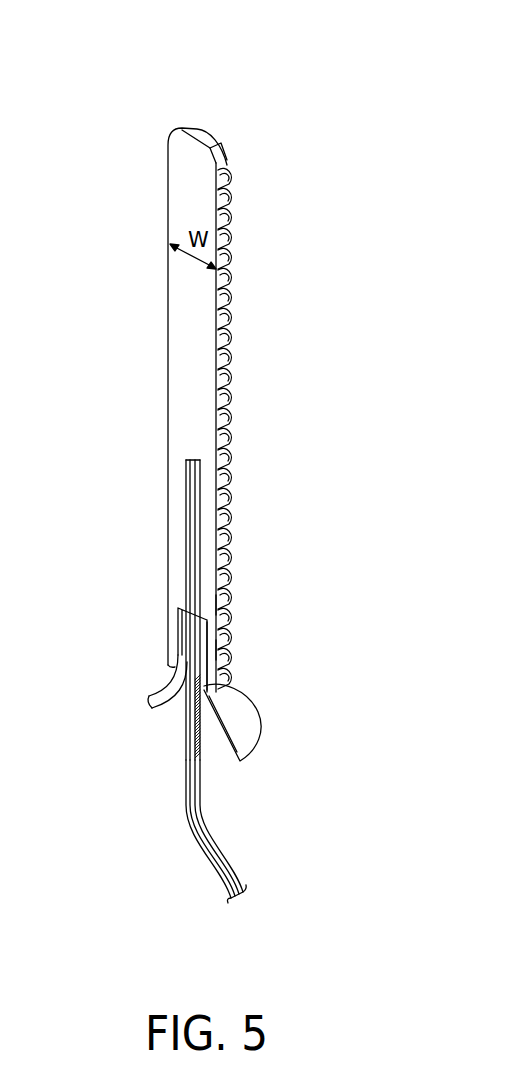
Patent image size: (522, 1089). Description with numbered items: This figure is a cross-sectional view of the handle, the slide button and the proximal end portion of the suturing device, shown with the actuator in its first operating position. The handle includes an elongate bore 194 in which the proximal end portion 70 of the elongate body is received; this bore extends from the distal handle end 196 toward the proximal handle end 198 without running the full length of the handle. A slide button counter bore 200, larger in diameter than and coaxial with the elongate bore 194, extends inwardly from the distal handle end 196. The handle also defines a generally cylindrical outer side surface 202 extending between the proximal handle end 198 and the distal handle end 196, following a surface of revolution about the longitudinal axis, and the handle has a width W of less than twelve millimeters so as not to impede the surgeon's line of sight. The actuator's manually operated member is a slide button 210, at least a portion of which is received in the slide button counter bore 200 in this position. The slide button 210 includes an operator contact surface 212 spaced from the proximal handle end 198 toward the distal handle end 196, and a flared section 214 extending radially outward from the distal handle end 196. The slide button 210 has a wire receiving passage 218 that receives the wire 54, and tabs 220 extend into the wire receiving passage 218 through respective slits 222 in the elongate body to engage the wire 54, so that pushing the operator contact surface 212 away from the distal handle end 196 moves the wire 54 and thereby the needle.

The wire 54 is at (195, 757).
The proximal end portion 70 is at (192, 512).
The elongate bore 194 is at (188, 562).
The distal handle end 196 is at (170, 680).
The proximal handle end 198 is at (199, 133).
The slide button counter bore 200 is at (180, 640).
The outer side surface 202 is at (231, 353).
The slide button 210 is at (254, 673).
The operator contact surface 212 is at (237, 712).
The flared section 214 is at (243, 732).
The wire receiving passage 218 is at (231, 604).
The tabs 220 is at (231, 648).
The slits 222 is at (187, 710).